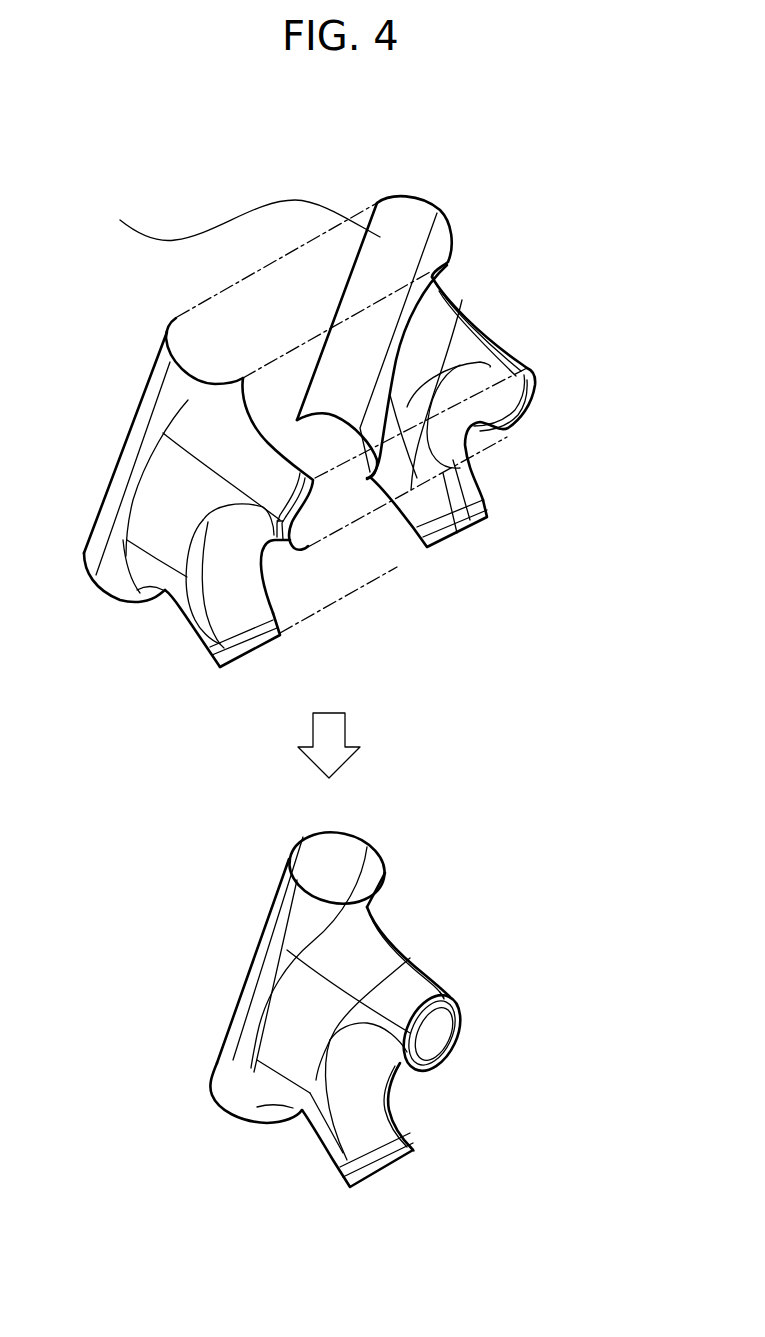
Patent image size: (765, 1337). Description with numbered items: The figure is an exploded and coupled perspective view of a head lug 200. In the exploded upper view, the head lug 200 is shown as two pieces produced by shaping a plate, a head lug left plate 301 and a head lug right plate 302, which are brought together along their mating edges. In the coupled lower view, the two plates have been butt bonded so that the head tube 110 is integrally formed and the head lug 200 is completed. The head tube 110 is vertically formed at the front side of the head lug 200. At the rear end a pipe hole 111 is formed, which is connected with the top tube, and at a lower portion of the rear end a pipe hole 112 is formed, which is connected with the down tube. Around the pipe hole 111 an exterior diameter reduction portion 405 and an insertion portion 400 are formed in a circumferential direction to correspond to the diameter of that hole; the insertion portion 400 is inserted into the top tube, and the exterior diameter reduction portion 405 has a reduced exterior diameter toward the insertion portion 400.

The head tube 110 is at (172, 320).
The pipe hole 111 is at (436, 1027).
The pipe hole 112 is at (392, 1171).
The head lug 200 is at (309, 597).
The head lug left plate 301 is at (243, 617).
The head lug right plate 302 is at (447, 540).
The insertion portion 400 is at (454, 996).
The exterior diameter reduction portion 405 is at (440, 995).